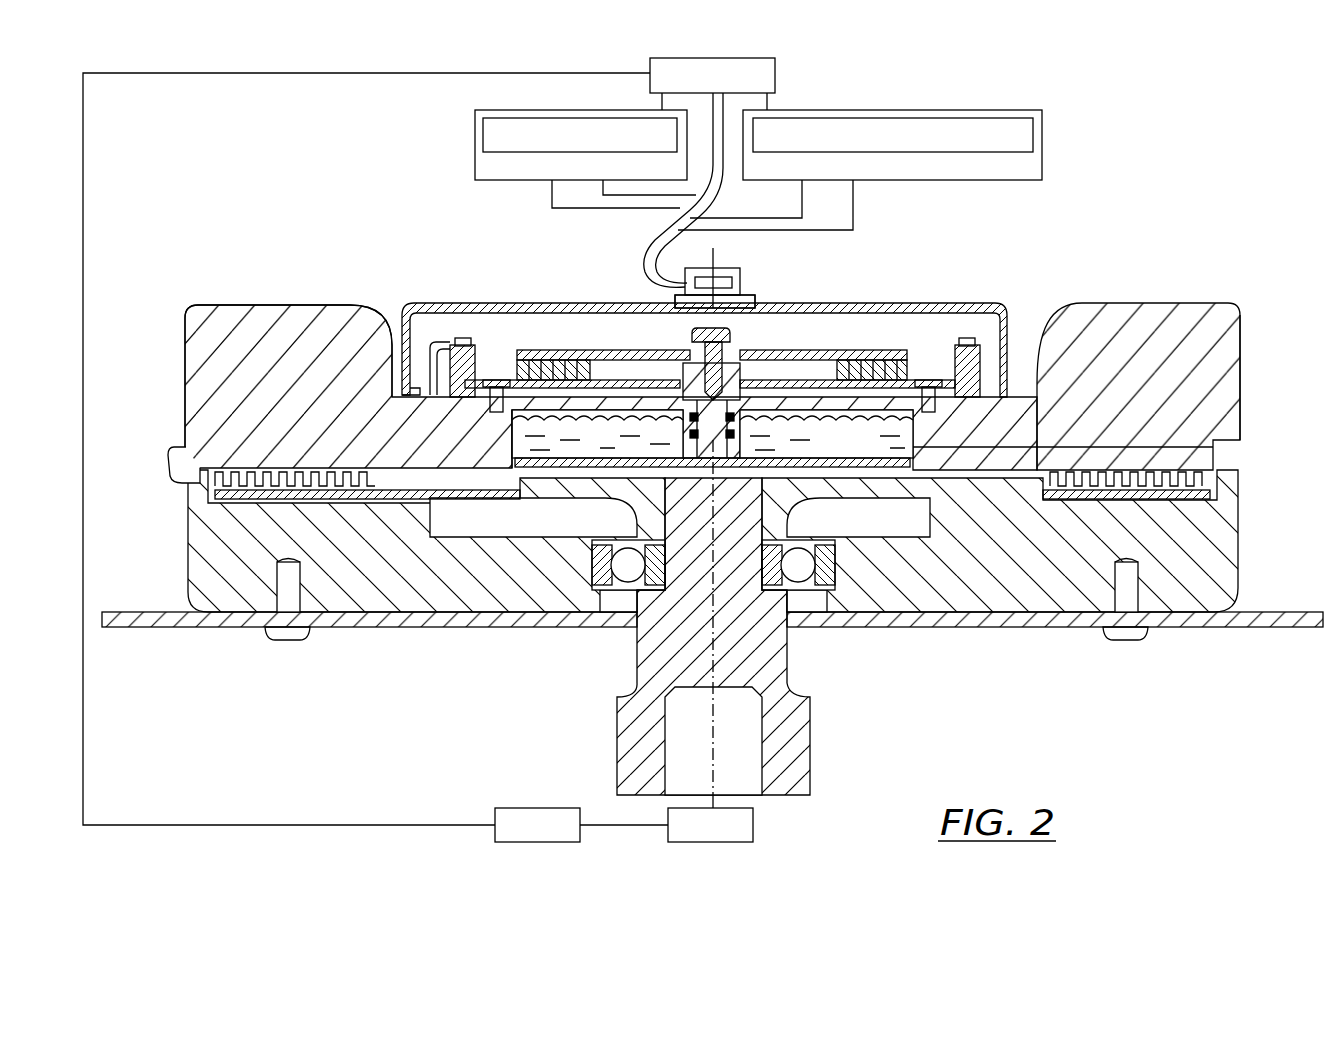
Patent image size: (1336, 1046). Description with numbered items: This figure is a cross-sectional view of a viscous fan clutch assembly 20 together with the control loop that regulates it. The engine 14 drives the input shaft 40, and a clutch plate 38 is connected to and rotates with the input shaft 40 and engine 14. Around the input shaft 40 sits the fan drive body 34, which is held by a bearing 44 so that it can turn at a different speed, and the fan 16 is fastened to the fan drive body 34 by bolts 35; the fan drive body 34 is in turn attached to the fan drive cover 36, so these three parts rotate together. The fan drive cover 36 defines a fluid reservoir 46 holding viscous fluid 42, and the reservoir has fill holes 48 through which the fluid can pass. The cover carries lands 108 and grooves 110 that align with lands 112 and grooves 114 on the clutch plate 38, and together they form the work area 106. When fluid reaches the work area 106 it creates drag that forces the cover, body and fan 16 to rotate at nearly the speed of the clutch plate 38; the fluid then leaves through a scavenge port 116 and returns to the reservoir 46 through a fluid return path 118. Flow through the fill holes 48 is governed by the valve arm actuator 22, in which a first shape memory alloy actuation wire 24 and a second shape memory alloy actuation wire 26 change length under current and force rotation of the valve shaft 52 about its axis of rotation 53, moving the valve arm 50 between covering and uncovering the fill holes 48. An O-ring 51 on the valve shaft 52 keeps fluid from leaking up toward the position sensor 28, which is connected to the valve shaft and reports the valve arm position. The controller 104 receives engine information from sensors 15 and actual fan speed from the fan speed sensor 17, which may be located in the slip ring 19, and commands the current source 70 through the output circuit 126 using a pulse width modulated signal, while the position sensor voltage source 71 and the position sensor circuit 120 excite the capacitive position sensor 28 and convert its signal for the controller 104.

The engine 14 is at (753, 825).
The sensors 15 is at (495, 812).
The fan 16 is at (1000, 629).
The fan speed sensor 17 is at (719, 280).
The slip ring 19 is at (745, 288).
The viscous fan clutch assembly 20 is at (1206, 252).
The valve arm actuator 22 is at (968, 252).
The first shape memory alloy actuation wire 24 is at (536, 350).
The second shape memory alloy actuation wire 26 is at (922, 340).
The position sensor 28 is at (823, 343).
The fan drive body 34 is at (1226, 520).
The bolts 35 is at (272, 635).
The fan drive cover 36 is at (1216, 348).
The clutch plate 38 is at (795, 516).
The input shaft 40 is at (768, 650).
The viscous fluid 42 is at (505, 446).
The bearing 44 is at (628, 572).
The fluid reservoir 46 is at (826, 434).
The fill hole 48 is at (885, 468).
The valve arm 50 is at (597, 434).
The O-ring 51 is at (694, 436).
The valve shaft 52 is at (750, 350).
The axis of rotation 53 is at (713, 260).
The current source 70 is at (475, 136).
The position sensor voltage source 71 is at (1005, 110).
The controller 104 is at (778, 73).
The work area 106 is at (1174, 460).
The lands 108 is at (195, 447).
The grooves 110 is at (235, 470).
The lands 112 is at (248, 487).
The grooves 114 is at (258, 500).
The scavenge port 116 is at (1230, 465).
The fluid return path 118 is at (1112, 446).
The position sensor circuit 120 is at (1042, 160).
The output circuit 126 is at (475, 166).